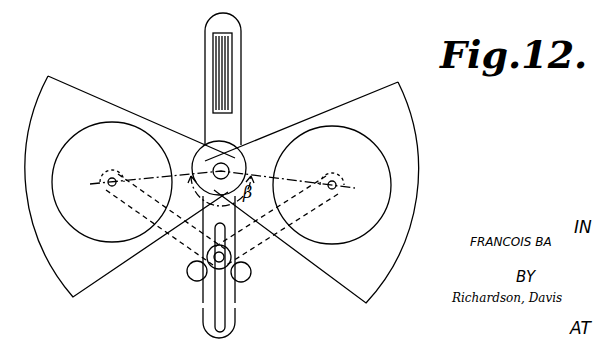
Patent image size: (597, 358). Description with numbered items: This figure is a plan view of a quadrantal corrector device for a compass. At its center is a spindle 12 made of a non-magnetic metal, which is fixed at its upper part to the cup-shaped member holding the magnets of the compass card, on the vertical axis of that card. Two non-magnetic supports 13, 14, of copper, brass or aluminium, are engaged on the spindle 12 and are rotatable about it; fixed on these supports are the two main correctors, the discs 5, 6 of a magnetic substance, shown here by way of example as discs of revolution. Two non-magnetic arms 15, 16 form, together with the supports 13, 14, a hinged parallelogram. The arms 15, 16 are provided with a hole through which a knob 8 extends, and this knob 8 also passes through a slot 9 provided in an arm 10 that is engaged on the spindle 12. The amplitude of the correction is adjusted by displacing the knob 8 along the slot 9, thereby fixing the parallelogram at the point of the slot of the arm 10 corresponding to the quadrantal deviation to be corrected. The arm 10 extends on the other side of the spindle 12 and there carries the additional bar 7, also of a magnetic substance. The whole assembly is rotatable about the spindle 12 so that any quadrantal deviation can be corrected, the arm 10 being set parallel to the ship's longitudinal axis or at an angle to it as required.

The main corrector disc 5 is at (112, 143).
The main corrector disc 6 is at (328, 148).
The additional bar 7 is at (220, 58).
The knob 8 is at (205, 262).
The slot 9 is at (203, 302).
The arm 10 is at (230, 318).
The spindle 12 is at (213, 200).
The non-magnetic support 13 is at (70, 95).
The non-magnetic support 14 is at (364, 112).
The non-magnetic arm 15 is at (184, 229).
The non-magnetic arm 16 is at (253, 240).